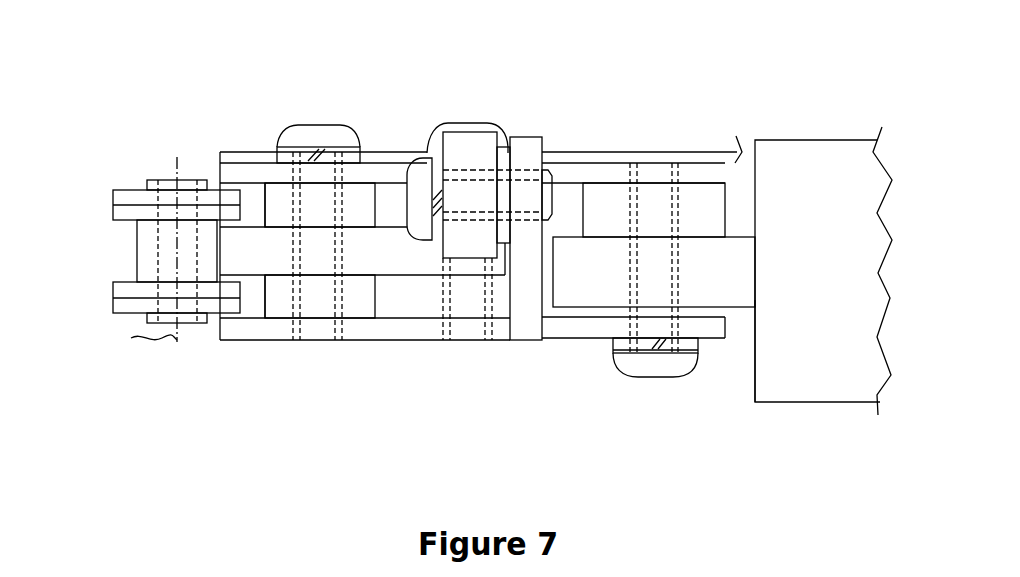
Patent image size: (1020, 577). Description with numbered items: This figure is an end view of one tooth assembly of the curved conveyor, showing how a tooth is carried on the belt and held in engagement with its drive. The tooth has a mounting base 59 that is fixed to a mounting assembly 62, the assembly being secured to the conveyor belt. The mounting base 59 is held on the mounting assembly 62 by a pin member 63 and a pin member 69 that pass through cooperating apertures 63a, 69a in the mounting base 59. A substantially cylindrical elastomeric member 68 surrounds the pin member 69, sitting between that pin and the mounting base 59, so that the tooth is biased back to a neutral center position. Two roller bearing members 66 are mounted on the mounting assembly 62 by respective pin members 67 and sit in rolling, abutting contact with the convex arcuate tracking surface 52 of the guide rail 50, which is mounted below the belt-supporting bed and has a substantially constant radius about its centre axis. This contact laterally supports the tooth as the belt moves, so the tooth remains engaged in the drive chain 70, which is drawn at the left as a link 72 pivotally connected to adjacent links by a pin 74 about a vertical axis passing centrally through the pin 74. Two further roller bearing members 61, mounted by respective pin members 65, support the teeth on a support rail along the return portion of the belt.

The guide rail 50 is at (865, 282).
The convex arcuate tracking surface 52 is at (755, 377).
The mounting base 59 is at (262, 266).
The roller bearing member 61 is at (485, 138).
The mounting assembly 62 is at (407, 370).
The pin member 63 is at (440, 132).
The aperture 63a is at (493, 307).
The pin member 65 is at (412, 233).
The roller bearing member 66 is at (732, 282).
The pin member 67 is at (637, 365).
The elastomeric member 68 is at (362, 195).
The pin member 69 is at (308, 133).
The aperture 69a is at (298, 263).
The drive chain 70 is at (173, 100).
The link 72 is at (123, 188).
The pin 74 is at (137, 253).